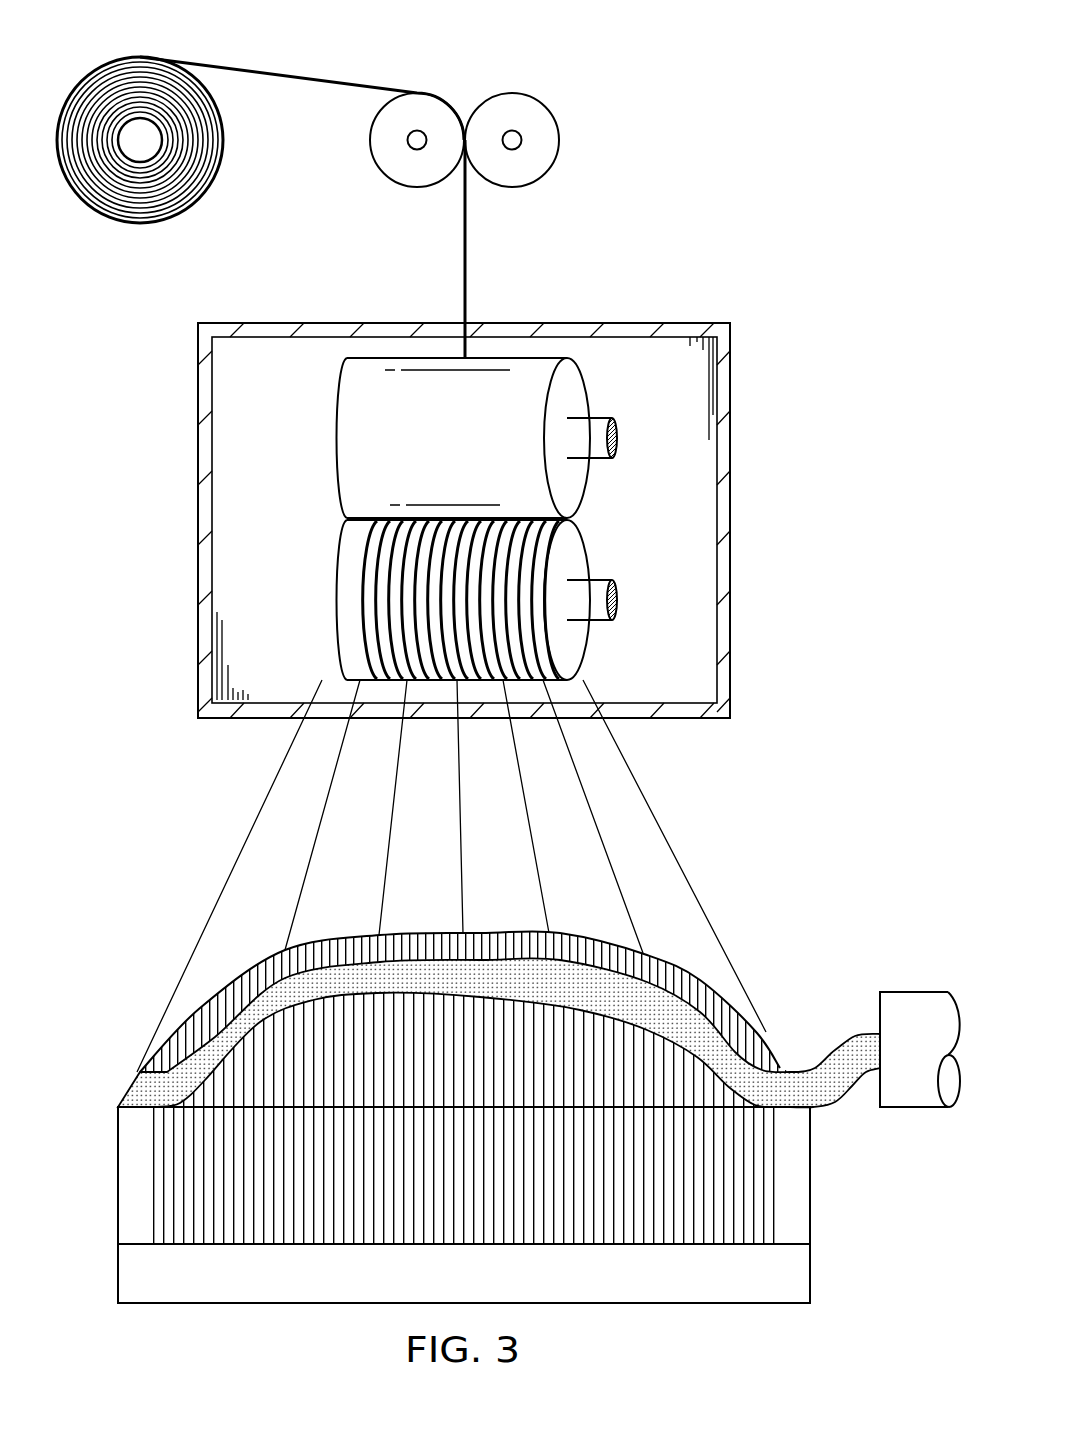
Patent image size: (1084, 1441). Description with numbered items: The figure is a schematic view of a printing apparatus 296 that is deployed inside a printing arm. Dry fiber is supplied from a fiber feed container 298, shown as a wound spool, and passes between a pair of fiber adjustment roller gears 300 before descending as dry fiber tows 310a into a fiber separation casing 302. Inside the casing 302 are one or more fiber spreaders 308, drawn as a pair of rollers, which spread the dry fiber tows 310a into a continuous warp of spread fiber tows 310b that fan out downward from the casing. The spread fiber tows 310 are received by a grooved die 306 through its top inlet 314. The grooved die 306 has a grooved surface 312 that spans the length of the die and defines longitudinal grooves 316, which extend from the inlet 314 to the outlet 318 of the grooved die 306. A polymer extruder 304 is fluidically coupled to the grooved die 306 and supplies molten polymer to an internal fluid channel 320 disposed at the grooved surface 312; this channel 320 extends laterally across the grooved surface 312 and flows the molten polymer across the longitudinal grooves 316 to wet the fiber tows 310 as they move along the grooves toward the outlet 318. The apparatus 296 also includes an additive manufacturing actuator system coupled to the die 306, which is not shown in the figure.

The printing apparatus 296 is at (692, 108).
The fiber feed container 298 is at (140, 57).
The fiber adjustment roller gears 300 is at (560, 141).
The fiber separation casing 302 is at (732, 462).
The polymer extruder 304 is at (916, 1108).
The grooved die 306 is at (469, 990).
The fiber spreaders 308 is at (327, 490).
The fiber tows 310 is at (472, 294).
The dry fiber tows 310a is at (467, 238).
The continuous warp of spread fiber tows 310b is at (270, 790).
The grooved surface 312 is at (465, 1146).
The top inlet 314 is at (434, 930).
The longitudinal grooves 316 is at (810, 1212).
The outlet 318 is at (810, 1268).
The internal fluid channel 320 is at (135, 1085).